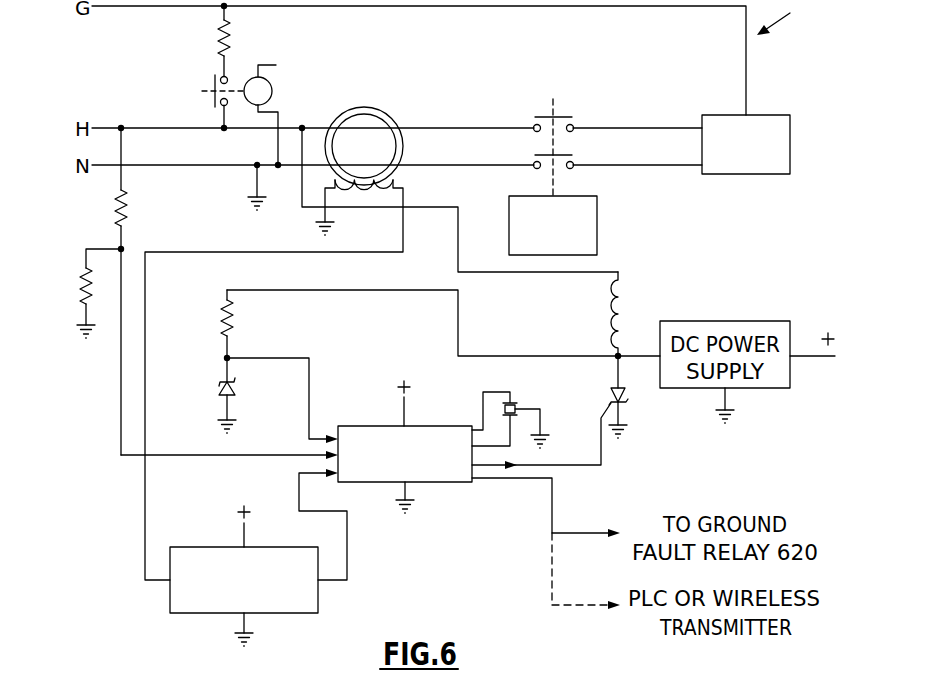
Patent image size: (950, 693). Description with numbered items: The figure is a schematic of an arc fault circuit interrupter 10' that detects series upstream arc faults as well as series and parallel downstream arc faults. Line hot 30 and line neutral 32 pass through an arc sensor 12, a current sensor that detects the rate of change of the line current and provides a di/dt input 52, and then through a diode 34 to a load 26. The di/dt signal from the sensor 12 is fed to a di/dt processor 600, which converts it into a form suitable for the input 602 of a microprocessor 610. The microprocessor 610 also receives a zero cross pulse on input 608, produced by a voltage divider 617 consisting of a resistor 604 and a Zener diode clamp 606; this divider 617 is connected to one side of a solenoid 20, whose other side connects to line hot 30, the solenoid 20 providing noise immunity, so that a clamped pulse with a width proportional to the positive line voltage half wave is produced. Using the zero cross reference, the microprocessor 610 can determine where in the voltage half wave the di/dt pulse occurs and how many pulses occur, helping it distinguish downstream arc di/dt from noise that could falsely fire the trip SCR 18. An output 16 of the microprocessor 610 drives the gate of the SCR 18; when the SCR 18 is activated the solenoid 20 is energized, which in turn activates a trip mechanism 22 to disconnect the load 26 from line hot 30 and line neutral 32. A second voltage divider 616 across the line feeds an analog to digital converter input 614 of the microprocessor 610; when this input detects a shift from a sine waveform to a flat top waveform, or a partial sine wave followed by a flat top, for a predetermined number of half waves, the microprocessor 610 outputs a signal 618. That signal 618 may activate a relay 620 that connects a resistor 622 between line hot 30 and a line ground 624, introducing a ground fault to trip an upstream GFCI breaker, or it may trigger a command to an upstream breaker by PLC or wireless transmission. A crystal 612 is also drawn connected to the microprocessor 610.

The arc fault circuit interrupter 10' is at (792, 17).
The arc sensor 12 is at (378, 112).
The output 16 is at (603, 452).
The SCR 18 is at (628, 398).
The solenoid 20 is at (625, 303).
The trip mechanism 22 is at (597, 212).
The load 26 is at (775, 115).
The line hot 30 is at (443, 126).
The line neutral 32 is at (450, 166).
The diode 34 is at (570, 116).
The input 52 is at (145, 478).
The di/dt processor 600 is at (168, 598).
The input 602 is at (347, 558).
The resistor 604 is at (232, 325).
The Zener diode clamp 606 is at (259, 395).
The zero cross pulse input 608 is at (309, 420).
The microprocessor 610 is at (438, 482).
The crystal oscillator 612 is at (511, 397).
The analog to digital converter input 614 is at (232, 456).
The voltage divider 616 is at (72, 193).
The voltage divider 617 is at (410, 359).
The signal 618 is at (279, 64).
The relay 620 is at (272, 92).
The resistor 622 is at (218, 44).
The line ground 624 is at (134, 7).